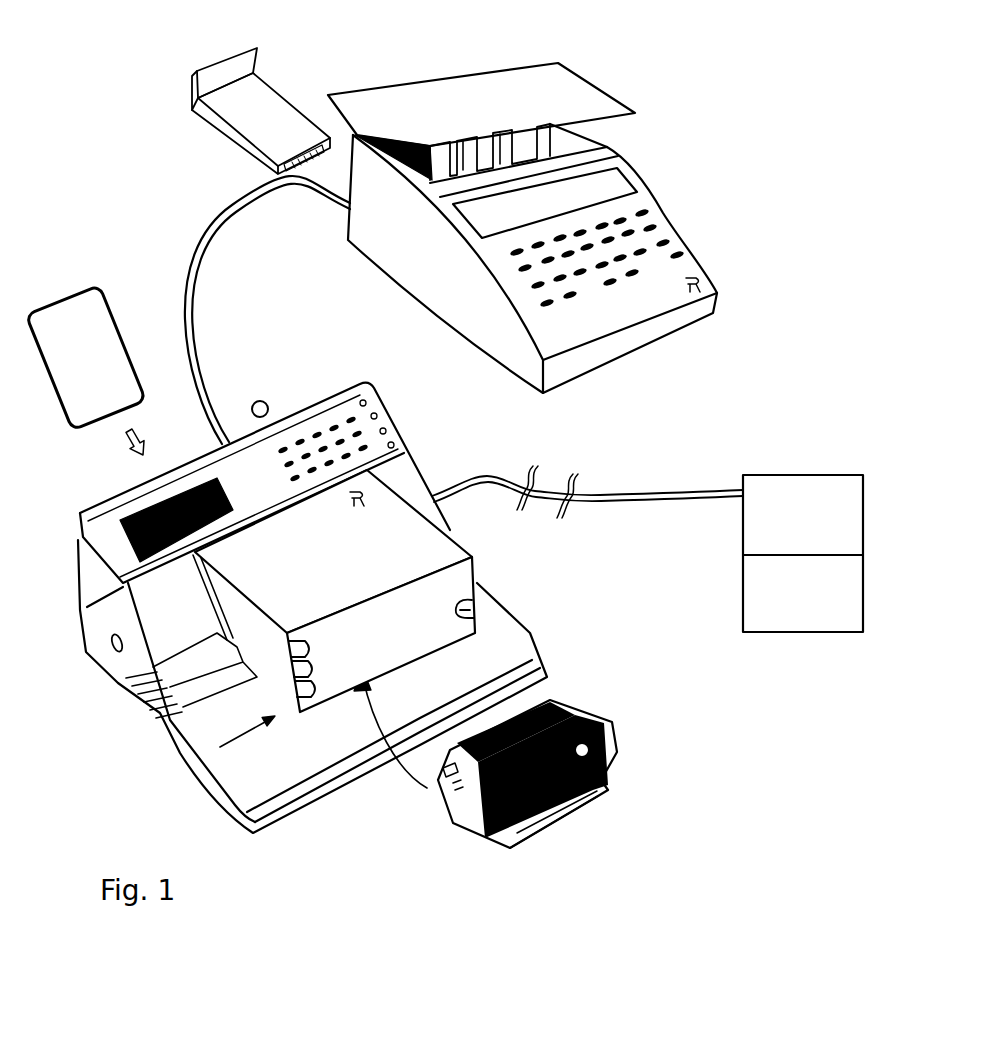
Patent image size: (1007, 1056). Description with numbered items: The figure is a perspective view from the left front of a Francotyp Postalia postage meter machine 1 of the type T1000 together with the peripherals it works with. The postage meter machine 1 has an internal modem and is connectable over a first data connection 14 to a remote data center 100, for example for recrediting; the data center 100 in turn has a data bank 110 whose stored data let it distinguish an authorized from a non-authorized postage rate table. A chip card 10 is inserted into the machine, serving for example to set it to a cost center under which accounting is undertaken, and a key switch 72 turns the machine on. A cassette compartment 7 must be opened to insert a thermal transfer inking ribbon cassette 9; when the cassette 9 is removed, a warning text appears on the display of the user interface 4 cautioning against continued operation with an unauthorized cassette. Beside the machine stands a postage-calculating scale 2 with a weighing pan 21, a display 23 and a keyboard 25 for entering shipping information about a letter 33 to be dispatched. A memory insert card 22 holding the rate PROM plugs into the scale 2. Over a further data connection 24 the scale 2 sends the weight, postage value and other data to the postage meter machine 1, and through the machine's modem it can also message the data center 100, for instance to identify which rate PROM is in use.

The postage meter machine 1 is at (553, 662).
The postage-calculating scale 2 is at (607, 373).
The user interface 4 is at (380, 418).
The cassette compartment 7 is at (462, 580).
The thermal transfer inking ribbon cassette 9 is at (613, 755).
The chip card 10 is at (78, 288).
The first data connection 14 is at (623, 500).
The weighing pan 21 is at (618, 130).
The memory insert card 22 is at (256, 100).
The display 23 is at (613, 186).
The further data connection 24 is at (226, 222).
The keyboard 25 is at (675, 232).
The letter 33 is at (481, 92).
The key switch 72 is at (258, 401).
The data center 100 is at (743, 524).
The data bank 110 is at (745, 586).